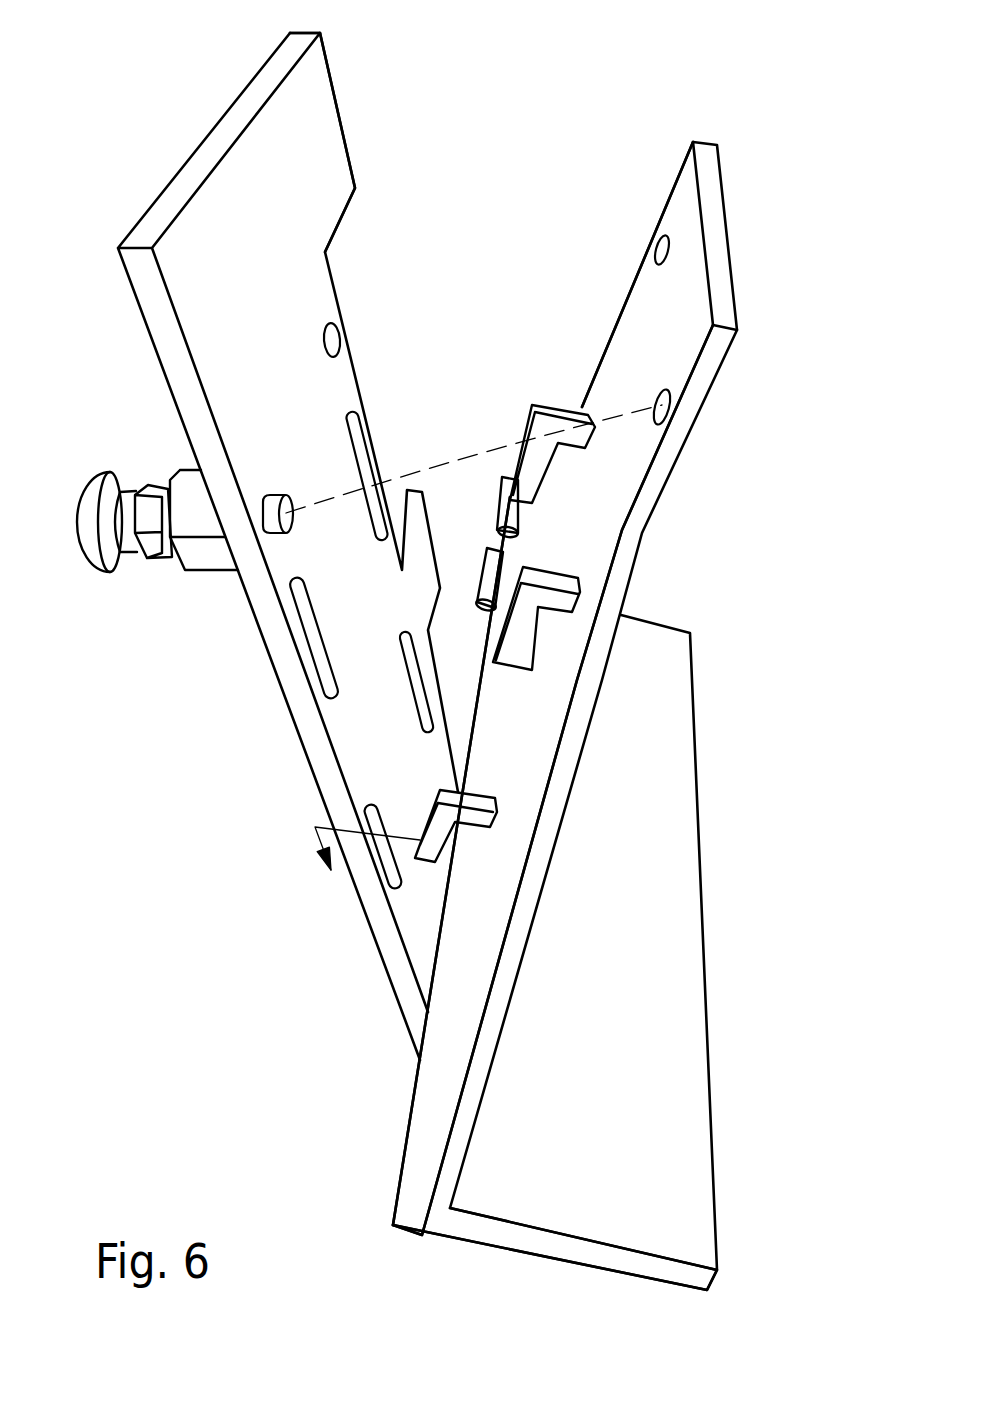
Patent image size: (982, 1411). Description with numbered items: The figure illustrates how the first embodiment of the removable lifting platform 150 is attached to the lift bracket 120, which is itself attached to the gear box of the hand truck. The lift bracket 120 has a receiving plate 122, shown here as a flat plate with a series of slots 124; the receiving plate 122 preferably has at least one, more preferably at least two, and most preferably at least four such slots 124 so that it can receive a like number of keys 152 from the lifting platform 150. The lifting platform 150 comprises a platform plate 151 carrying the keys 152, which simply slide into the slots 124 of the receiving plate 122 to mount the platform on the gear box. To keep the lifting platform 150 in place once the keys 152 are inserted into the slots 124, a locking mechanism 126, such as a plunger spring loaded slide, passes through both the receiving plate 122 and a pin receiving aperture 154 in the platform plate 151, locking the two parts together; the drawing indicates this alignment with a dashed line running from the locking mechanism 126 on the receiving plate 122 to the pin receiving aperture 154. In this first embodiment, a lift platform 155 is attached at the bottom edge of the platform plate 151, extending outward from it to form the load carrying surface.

The lift bracket 120 is at (390, 534).
The receiving plate 122 is at (307, 157).
The slots 124 is at (358, 440).
The locking mechanism 126 is at (115, 487).
The lifting platform 150 is at (612, 716).
The platform plate 151 is at (545, 700).
The keys 152 is at (537, 413).
The pin receiving aperture 154 is at (665, 403).
The lift platform 155 is at (663, 1050).